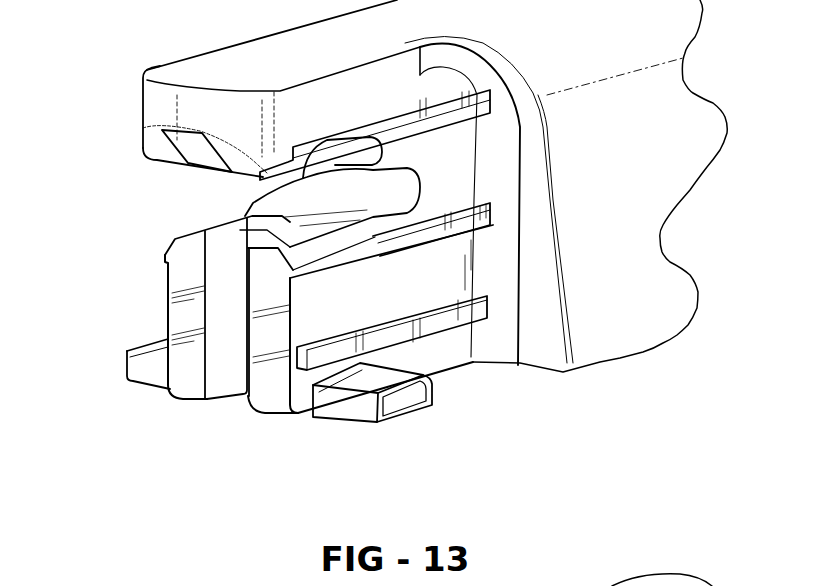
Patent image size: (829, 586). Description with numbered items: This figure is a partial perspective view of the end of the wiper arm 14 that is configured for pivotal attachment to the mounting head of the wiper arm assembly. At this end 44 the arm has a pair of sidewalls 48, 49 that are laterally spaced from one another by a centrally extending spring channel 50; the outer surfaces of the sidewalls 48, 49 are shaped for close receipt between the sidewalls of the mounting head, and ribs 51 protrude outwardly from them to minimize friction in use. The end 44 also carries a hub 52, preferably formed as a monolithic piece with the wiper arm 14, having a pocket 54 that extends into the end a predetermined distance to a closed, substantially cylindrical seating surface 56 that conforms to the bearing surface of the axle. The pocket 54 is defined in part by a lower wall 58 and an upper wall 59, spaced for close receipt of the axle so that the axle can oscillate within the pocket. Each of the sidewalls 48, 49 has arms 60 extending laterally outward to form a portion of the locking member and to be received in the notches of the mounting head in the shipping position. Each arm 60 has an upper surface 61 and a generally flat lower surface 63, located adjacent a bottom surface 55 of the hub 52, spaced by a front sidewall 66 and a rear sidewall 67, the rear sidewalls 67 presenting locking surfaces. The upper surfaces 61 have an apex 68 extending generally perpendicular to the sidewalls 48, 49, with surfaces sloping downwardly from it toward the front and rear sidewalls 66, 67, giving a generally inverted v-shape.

The wiper arm 14 is at (633, 353).
The end of the wiper arm 44 is at (153, 107).
The sidewall 48 is at (168, 285).
The sidewall 49 is at (447, 352).
The spring channel 50 is at (211, 420).
The ribs 51 is at (470, 312).
The hub 52 is at (600, 253).
The pocket 54 is at (213, 233).
The bottom surface of the hub 55 is at (230, 400).
The seating surface 56 is at (346, 161).
The lower wall 58 is at (257, 215).
The upper wall 59 is at (167, 170).
The arms 60 is at (153, 372).
The upper surfaces 61 is at (147, 339).
The lower surfaces 63 is at (137, 380).
The front sidewalls 66 is at (153, 372).
The rear sidewalls 67 is at (165, 332).
The apex 68 is at (162, 337).